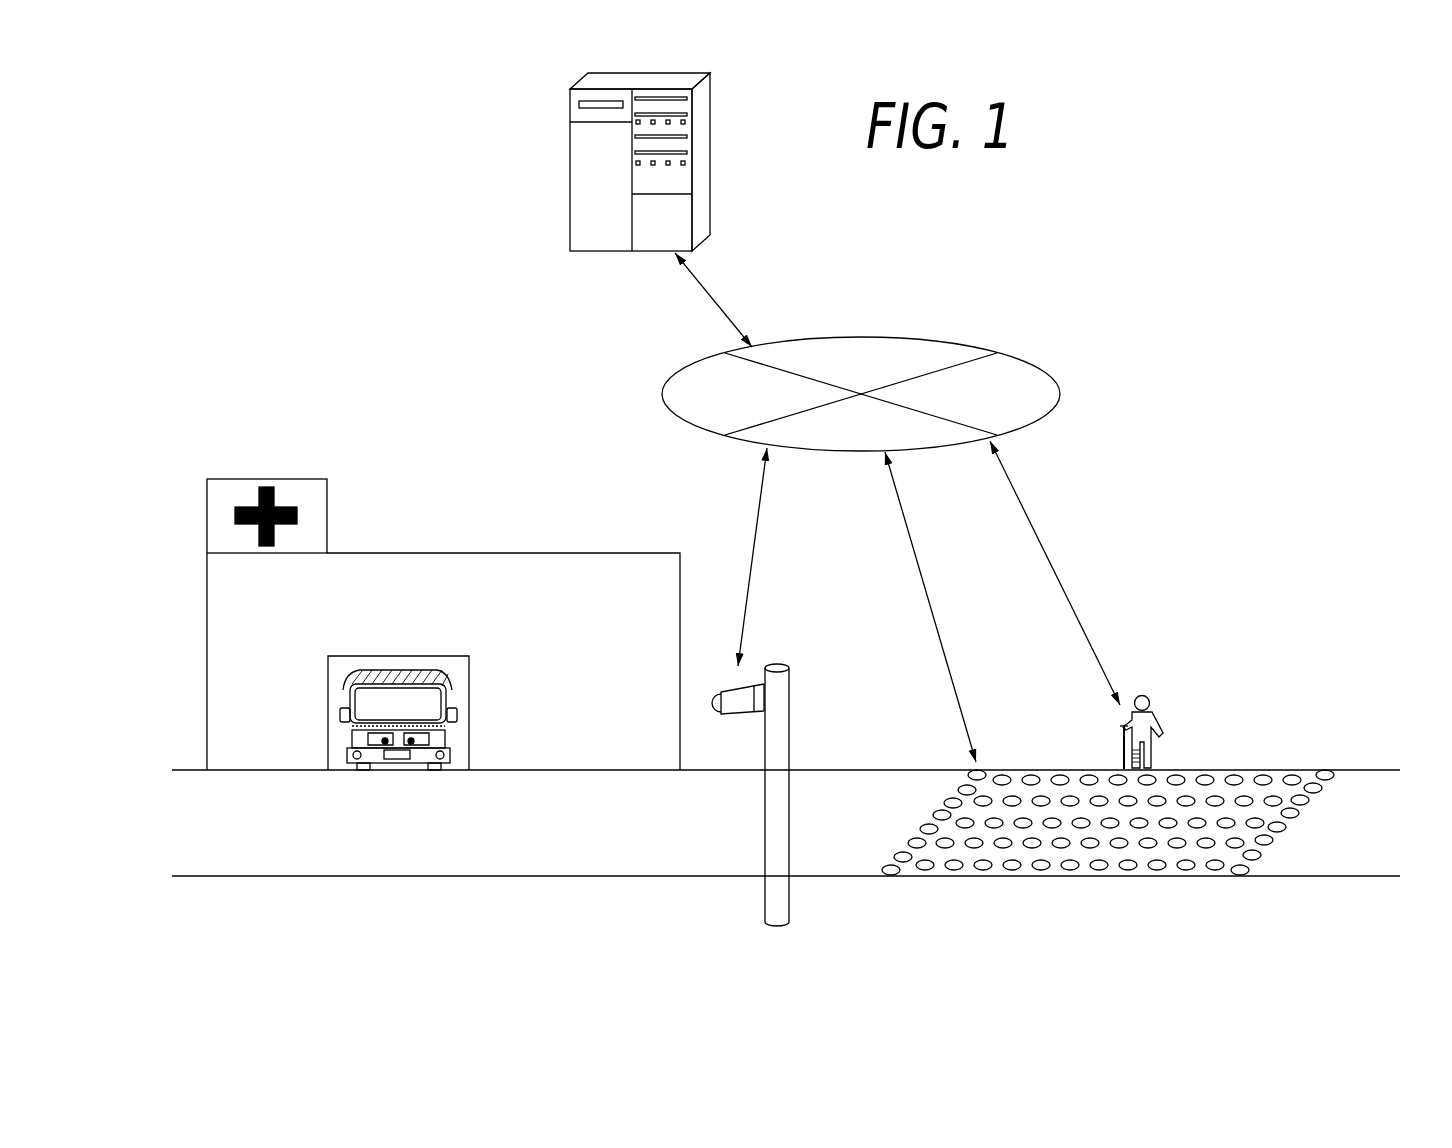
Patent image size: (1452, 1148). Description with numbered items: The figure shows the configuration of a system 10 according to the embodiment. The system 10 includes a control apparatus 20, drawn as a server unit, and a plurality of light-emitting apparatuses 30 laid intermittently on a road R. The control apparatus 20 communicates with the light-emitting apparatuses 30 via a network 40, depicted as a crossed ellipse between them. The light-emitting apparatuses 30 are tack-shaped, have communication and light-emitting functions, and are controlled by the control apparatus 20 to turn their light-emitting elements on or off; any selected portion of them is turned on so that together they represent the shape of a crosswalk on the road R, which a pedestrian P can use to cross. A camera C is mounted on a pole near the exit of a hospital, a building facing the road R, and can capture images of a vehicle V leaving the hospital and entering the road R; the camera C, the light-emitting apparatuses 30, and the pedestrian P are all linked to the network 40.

The system 10 is at (1142, 277).
The control apparatus 20 is at (570, 174).
The light-emitting apparatus 30 is at (1247, 885).
The network 40 is at (662, 393).
The vehicle V is at (452, 688).
The camera C is at (728, 710).
The pedestrian P is at (1153, 713).
The road R is at (408, 843).